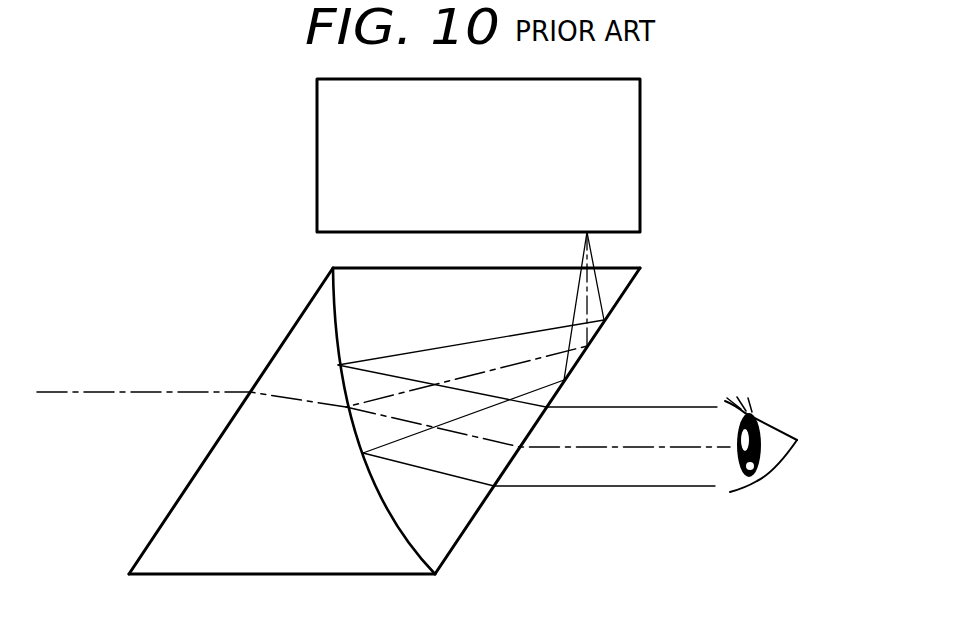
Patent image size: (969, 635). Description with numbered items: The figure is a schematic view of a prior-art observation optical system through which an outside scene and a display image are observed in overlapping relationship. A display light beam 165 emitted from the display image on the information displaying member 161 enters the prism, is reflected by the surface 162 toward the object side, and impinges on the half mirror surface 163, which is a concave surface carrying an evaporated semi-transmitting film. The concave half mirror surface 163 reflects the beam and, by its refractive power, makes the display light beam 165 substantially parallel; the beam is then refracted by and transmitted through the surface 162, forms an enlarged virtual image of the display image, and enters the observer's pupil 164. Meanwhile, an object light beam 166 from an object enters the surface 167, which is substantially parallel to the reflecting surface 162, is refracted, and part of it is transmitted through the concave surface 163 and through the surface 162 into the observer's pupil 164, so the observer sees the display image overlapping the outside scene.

The information displaying member 161 is at (317, 122).
The surface 162 is at (477, 513).
The half mirror surface 163 is at (334, 328).
The observer's pupil 164 is at (778, 421).
The display light beam 165 is at (590, 288).
The object light beam 166 is at (88, 392).
The surface 167 is at (168, 515).